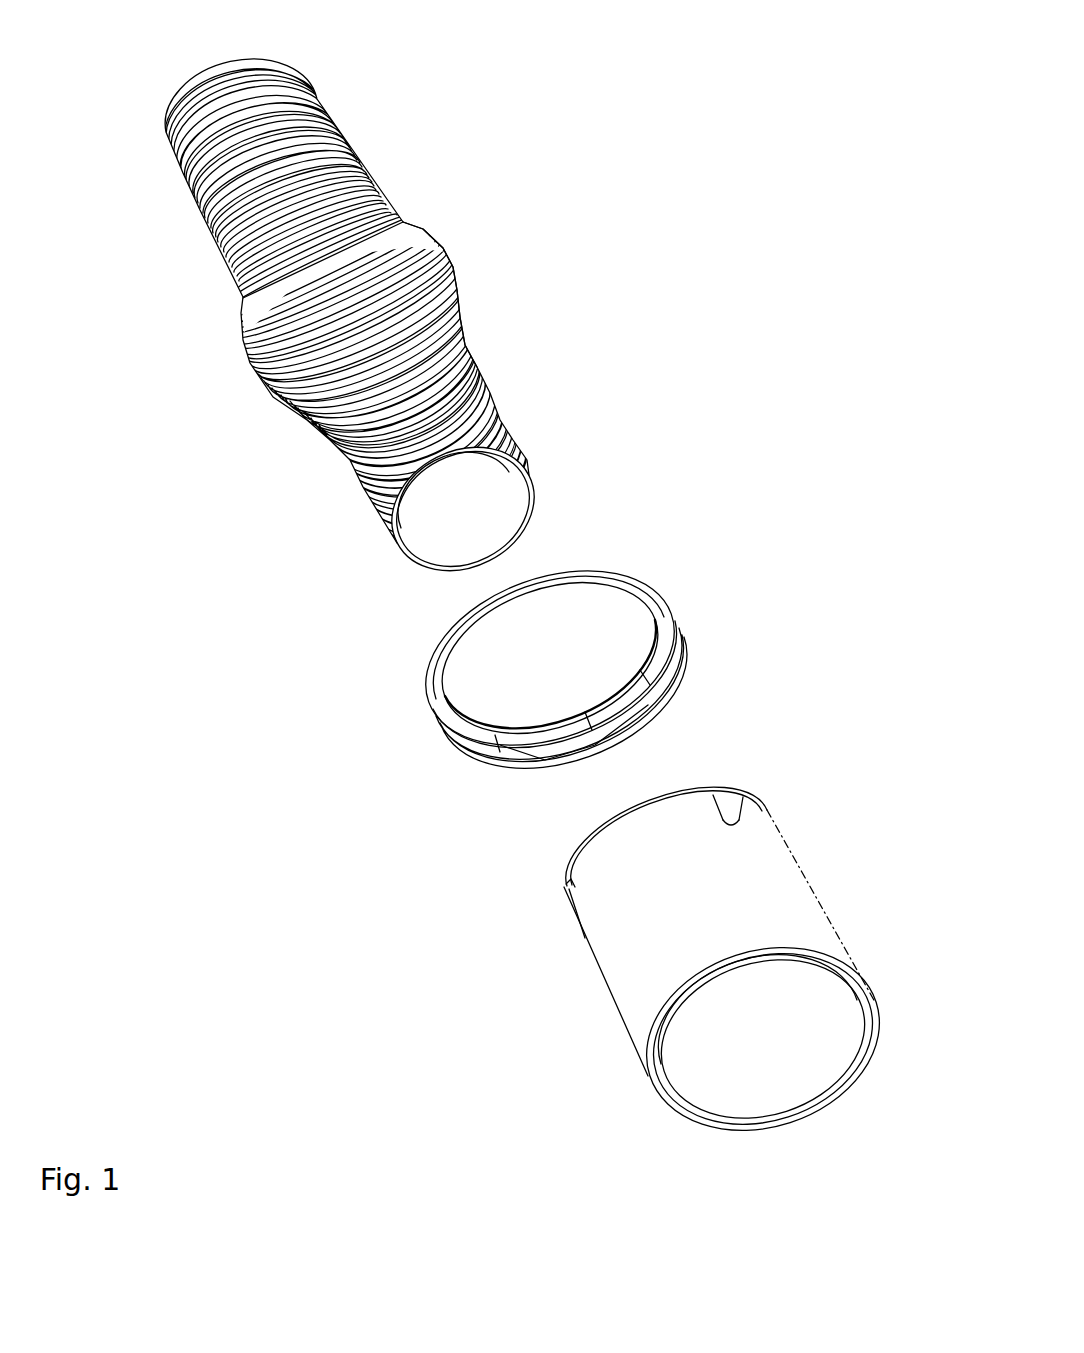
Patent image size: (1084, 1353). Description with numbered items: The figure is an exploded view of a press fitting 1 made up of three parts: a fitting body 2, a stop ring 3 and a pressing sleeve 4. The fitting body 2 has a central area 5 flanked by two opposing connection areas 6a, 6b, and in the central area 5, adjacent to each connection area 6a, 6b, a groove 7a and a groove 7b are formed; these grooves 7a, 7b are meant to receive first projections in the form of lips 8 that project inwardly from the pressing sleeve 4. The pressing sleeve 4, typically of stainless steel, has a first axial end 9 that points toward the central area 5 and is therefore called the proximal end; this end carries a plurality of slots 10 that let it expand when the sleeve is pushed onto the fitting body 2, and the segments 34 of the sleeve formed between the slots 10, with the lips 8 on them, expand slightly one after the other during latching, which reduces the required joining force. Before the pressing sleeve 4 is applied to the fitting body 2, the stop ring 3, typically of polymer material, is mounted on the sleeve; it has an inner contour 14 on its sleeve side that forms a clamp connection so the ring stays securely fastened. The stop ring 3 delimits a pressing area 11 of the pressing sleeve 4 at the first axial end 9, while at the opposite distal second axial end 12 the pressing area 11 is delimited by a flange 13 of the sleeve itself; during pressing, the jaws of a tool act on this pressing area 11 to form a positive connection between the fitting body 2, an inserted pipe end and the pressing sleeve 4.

The press fitting 1 is at (320, 940).
The fitting body 2 is at (525, 180).
The stop ring 3 is at (745, 568).
The pressing sleeve 4 is at (908, 795).
The central area 5 is at (195, 347).
The connection area 6a is at (255, 460).
The connection area 6b is at (92, 147).
The groove 7a is at (453, 290).
The groove 7b is at (399, 217).
The lip 8 is at (722, 796).
The first axial end 9 is at (598, 822).
The slot 10 is at (724, 812).
The pressing area 11 is at (772, 787).
The second axial end 12 is at (765, 1158).
The flange 13 is at (674, 1110).
The inner contour 14 is at (648, 658).
The segment 34 is at (632, 837).